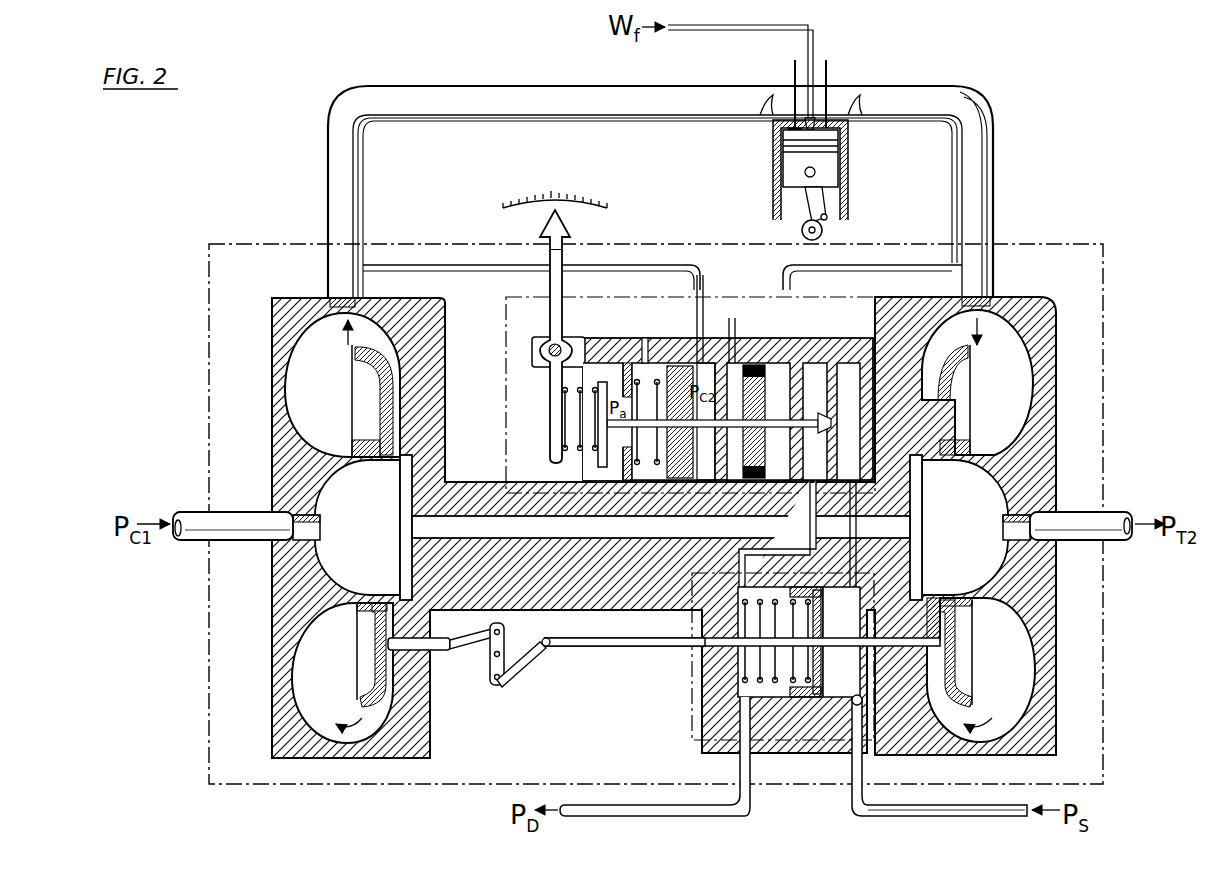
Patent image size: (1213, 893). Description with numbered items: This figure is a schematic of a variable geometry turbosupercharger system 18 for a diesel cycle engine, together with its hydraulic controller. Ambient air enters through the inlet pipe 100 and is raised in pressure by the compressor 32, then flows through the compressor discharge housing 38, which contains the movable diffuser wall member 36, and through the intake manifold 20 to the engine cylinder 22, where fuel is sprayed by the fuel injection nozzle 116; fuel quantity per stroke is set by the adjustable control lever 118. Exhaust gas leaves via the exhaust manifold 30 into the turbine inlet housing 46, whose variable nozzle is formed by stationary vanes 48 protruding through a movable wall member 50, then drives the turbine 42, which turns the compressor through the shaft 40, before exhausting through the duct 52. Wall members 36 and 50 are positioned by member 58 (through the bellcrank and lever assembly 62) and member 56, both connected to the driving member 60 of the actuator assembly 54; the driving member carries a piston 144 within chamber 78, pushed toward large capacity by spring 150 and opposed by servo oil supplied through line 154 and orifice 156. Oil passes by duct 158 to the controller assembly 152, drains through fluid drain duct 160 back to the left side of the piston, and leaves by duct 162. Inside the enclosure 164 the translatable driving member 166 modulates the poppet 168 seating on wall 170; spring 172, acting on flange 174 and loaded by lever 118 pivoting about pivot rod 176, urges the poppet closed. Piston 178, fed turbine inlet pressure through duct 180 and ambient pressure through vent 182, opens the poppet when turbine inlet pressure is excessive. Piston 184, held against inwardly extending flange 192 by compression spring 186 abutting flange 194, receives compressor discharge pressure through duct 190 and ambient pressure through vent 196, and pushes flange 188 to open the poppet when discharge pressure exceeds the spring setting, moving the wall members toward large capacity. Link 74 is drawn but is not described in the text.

The turbosupercharger system 18 is at (207, 323).
The intake manifold 20 is at (327, 164).
The engine cylinder 22 is at (772, 152).
The exhaust manifold 30 is at (994, 152).
The compressor 32 is at (390, 559).
The movable diffuser wall member 36 is at (356, 634).
The compressor discharge housing 38 is at (336, 421).
The shaft 40 is at (468, 514).
The turbine 42 is at (956, 559).
The turbine inlet housing 46 is at (1017, 421).
The stationary vanes 48 is at (932, 395).
The movable wall member 50 is at (975, 636).
The duct 52 is at (1118, 518).
The actuator assembly 54 is at (690, 712).
The member 56 is at (934, 612).
The member 58 is at (549, 648).
The driving member 60 is at (840, 637).
The bellcrank and lever assembly 62 is at (470, 668).
The vane link 74 is at (418, 634).
The chamber 78 is at (830, 705).
The inlet pipe 100 is at (196, 520).
The fuel injection nozzle 116 is at (818, 80).
The adjustable control lever 118 is at (575, 225).
The piston 144 is at (822, 602).
The spring 150 is at (780, 600).
The controller assembly 152 is at (504, 326).
The line 154 is at (982, 818).
The orifice 156 is at (860, 708).
The duct 158 is at (852, 478).
The fluid drain duct 160 is at (812, 478).
The duct 162 is at (600, 818).
The enclosure 164 is at (604, 337).
The translatable driving member 166 is at (716, 428).
The poppet 168 is at (831, 426).
The wall 170 is at (846, 362).
The spring 172 is at (550, 418).
The flange 174 is at (598, 462).
The pivot rod 176 is at (548, 344).
The piston 178 is at (764, 440).
The duct 180 is at (900, 272).
The vent 182 is at (732, 318).
The piston 184 is at (670, 364).
The compression spring 186 is at (636, 378).
The flange 188 is at (646, 430).
The duct 190 is at (586, 272).
The inwardly extending flange 192 is at (700, 360).
The flange 194 is at (606, 383).
The vent 196 is at (645, 338).